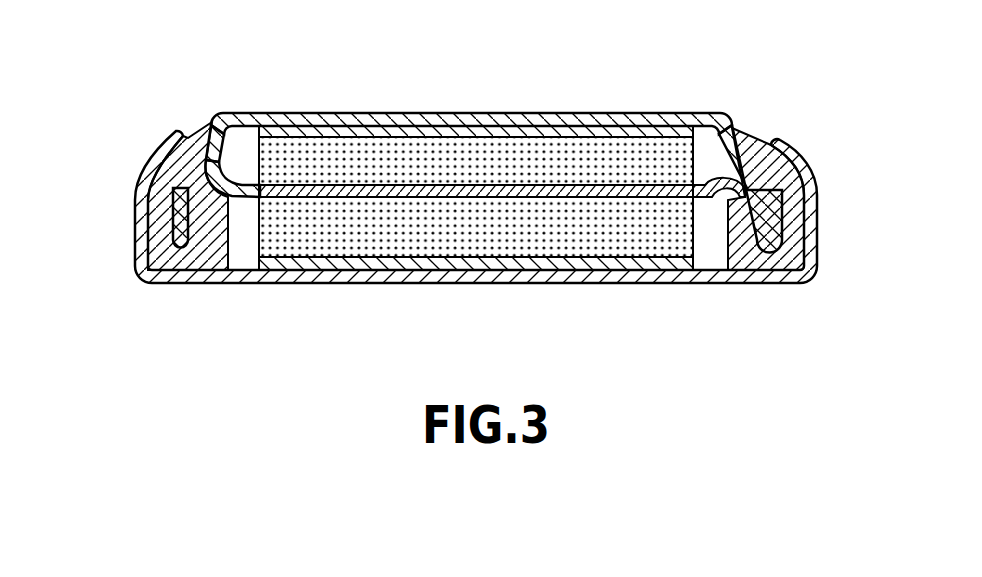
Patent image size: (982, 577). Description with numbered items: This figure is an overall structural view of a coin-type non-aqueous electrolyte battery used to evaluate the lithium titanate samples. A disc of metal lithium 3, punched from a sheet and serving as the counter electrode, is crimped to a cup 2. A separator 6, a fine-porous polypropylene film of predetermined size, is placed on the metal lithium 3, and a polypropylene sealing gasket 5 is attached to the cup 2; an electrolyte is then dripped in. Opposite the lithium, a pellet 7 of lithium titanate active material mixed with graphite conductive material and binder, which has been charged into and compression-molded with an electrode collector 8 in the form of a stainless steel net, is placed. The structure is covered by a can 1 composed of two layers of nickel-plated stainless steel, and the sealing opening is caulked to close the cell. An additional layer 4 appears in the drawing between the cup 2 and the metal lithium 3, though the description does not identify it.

The can 1 is at (248, 275).
The cup 2 is at (327, 116).
The metal lithium 3 is at (423, 163).
The positive current collector 4 is at (512, 133).
The sealing gasket 5 is at (763, 147).
The separator 6 is at (597, 193).
The pellet 7 is at (402, 230).
The electrode collector 8 is at (598, 260).